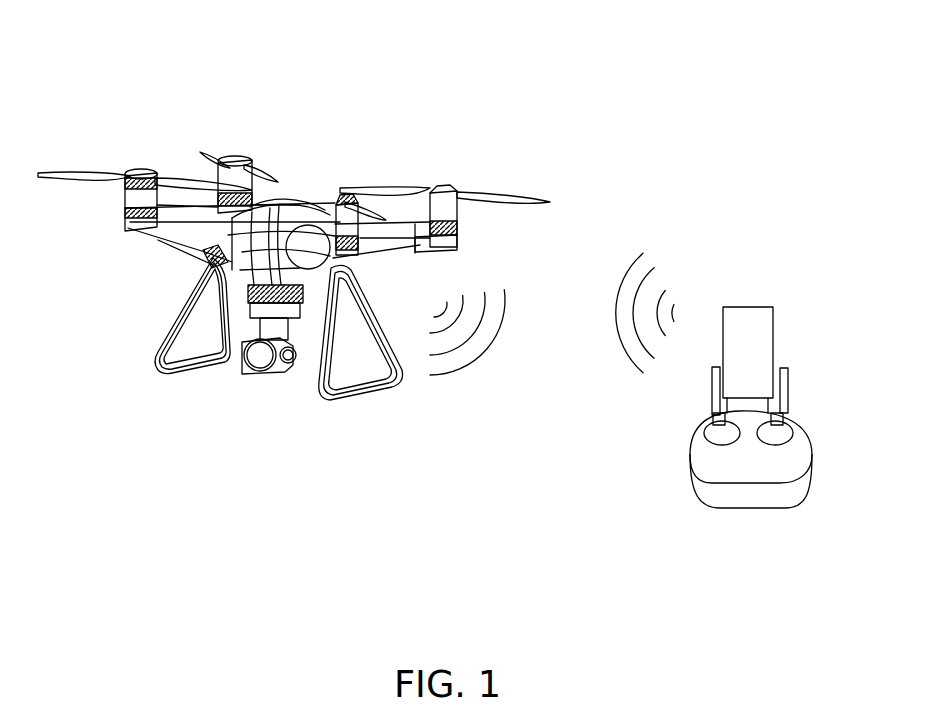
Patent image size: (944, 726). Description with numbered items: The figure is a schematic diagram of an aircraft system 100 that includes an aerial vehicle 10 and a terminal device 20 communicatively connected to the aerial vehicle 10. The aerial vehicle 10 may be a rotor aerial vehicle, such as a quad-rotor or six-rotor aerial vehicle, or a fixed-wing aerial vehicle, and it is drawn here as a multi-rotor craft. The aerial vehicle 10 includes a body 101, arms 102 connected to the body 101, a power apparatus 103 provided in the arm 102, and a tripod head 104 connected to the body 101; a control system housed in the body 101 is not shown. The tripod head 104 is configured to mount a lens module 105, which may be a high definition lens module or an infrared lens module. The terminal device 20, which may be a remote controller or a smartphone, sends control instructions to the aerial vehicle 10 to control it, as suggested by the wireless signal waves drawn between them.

The aircraft system 100 is at (506, 57).
The aerial vehicle 10 is at (120, 332).
The body 101 is at (284, 218).
The arms 102 is at (193, 246).
The power apparatus 103 is at (131, 182).
The tripod head 104 is at (253, 291).
The lens module 105 is at (262, 372).
The terminal device 20 is at (812, 352).